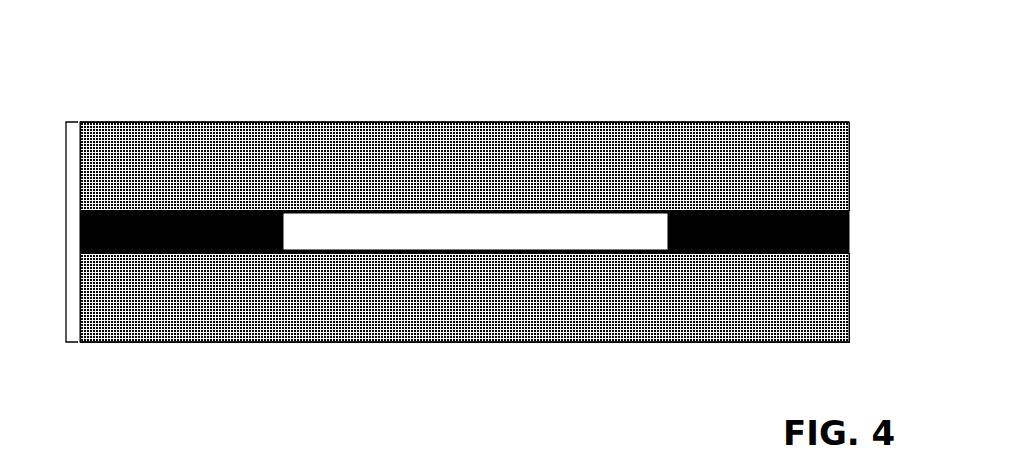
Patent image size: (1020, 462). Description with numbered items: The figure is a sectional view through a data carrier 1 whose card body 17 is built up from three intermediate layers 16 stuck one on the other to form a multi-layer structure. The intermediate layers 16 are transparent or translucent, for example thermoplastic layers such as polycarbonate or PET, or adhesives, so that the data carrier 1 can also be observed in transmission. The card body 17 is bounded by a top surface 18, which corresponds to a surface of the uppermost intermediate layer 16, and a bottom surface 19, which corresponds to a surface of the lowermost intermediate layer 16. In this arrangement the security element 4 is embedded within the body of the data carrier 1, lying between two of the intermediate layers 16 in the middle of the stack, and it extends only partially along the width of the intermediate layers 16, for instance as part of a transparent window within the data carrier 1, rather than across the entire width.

The data carrier 1 is at (100, 64).
The security element 4 is at (648, 232).
The intermediate layer 16 is at (828, 168).
The card body 17 is at (66, 233).
The top surface 18 is at (797, 121).
The bottom surface 19 is at (789, 342).